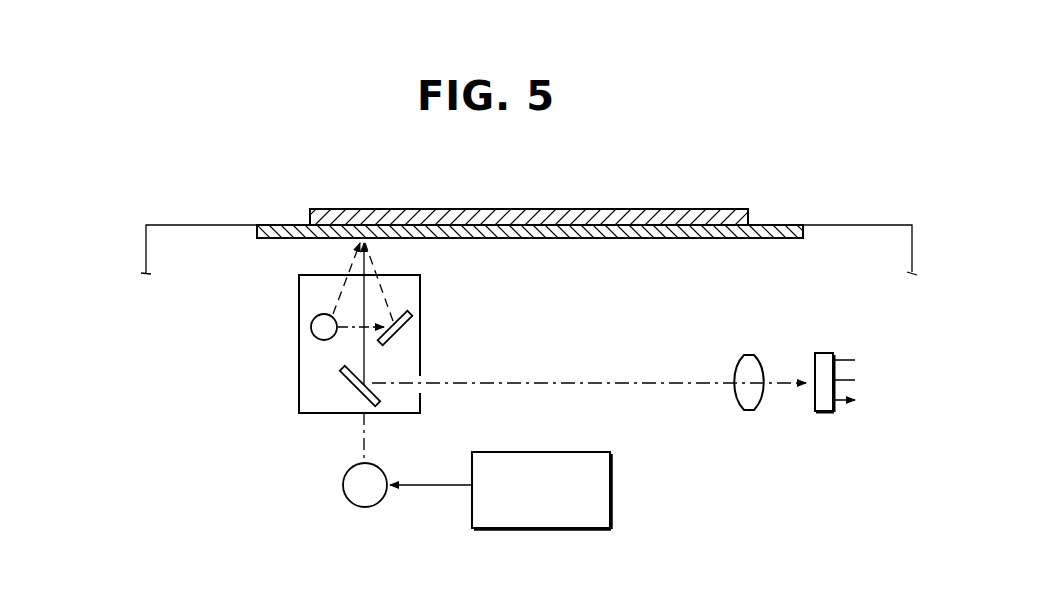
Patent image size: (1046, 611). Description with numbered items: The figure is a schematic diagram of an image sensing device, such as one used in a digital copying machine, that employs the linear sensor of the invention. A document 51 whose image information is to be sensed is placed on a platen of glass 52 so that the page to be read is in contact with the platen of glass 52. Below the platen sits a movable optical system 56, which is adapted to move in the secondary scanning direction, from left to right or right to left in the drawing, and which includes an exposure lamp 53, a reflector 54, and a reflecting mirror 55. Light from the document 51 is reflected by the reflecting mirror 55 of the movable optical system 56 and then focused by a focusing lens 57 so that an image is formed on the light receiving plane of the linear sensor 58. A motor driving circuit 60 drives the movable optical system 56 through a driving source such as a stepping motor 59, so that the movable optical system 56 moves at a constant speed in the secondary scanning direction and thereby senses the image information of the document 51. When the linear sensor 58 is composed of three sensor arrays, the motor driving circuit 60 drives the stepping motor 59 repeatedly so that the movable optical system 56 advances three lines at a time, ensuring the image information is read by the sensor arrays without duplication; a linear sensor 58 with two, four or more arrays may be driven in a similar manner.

The document 51 is at (547, 208).
The platen of glass 52 is at (781, 224).
The exposure lamp 53 is at (311, 326).
The reflector 54 is at (396, 338).
The reflecting mirror 55 is at (358, 394).
The movable optical system 56 is at (299, 380).
The focusing lens 57 is at (749, 355).
The linear sensor 58 is at (825, 353).
The stepping motor 59 is at (378, 467).
The motor driving circuit 60 is at (612, 473).